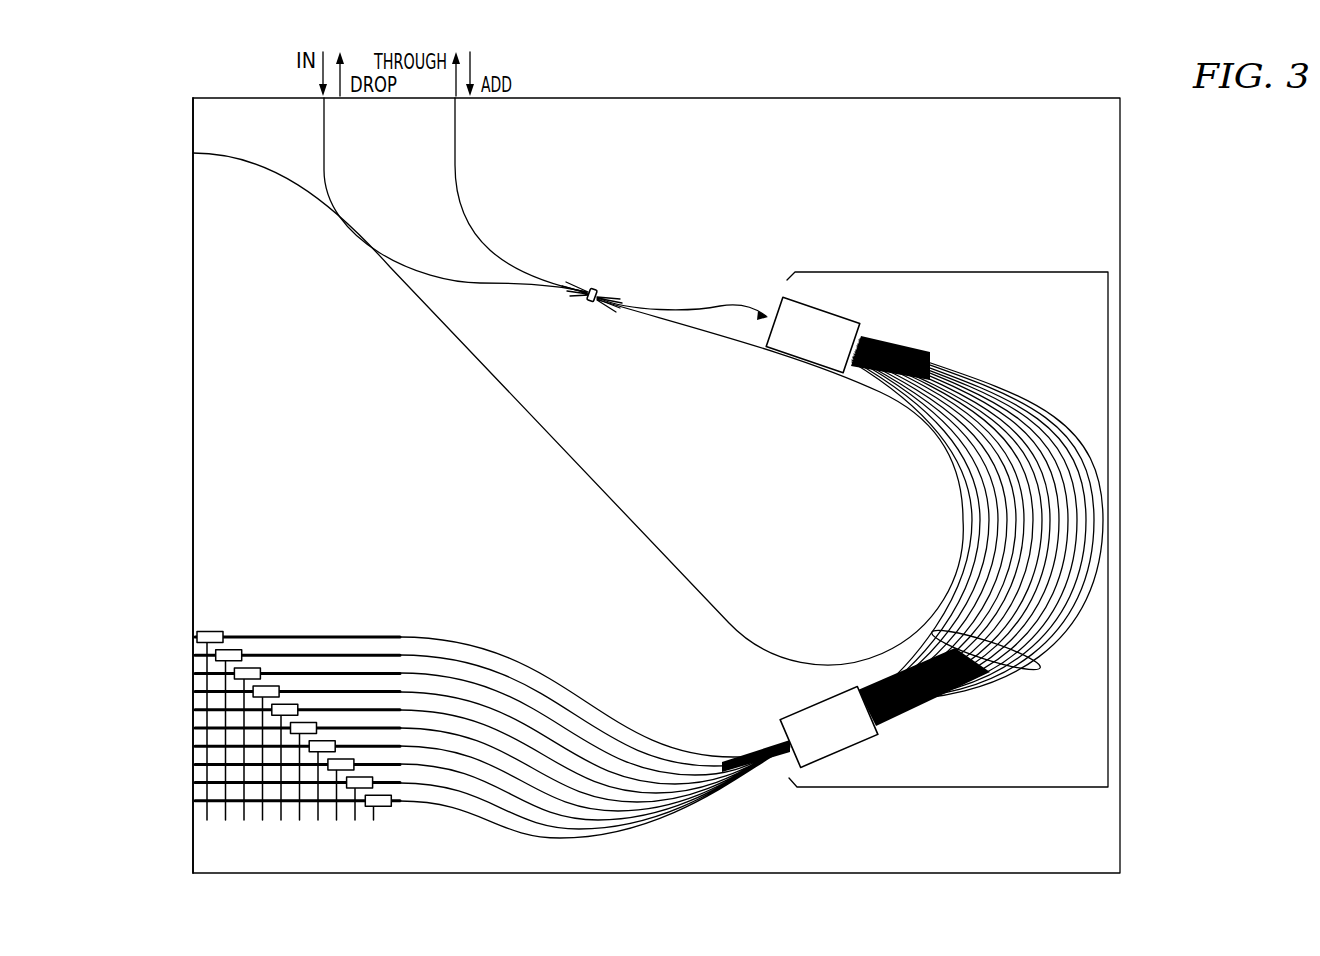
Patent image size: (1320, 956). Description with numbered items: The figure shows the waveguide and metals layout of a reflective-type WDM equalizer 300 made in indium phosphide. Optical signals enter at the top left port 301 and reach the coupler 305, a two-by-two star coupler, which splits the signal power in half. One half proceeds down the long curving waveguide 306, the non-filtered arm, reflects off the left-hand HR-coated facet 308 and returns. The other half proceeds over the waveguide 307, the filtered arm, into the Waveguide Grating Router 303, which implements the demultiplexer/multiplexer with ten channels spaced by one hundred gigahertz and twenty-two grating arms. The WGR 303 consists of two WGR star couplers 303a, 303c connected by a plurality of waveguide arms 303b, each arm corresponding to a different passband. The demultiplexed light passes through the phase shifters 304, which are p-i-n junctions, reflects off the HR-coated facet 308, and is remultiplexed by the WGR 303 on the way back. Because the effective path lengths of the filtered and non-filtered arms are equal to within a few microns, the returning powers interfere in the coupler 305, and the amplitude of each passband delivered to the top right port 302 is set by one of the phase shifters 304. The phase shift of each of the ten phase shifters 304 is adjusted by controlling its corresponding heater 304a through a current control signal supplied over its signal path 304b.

The WDM equalizer 300 is at (676, 98).
The top left port 301 is at (326, 128).
The top right port 302 is at (457, 128).
The Waveguide Grating Router 303 is at (952, 272).
The WGR star coupler 303a is at (857, 318).
The waveguide arms 303b is at (1040, 667).
The WGR star coupler 303c is at (866, 736).
The phase shifters 304 is at (318, 624).
The heater 304a is at (238, 648).
The signal path 304b is at (380, 818).
The coupler 305 is at (608, 283).
The long curving waveguide 306 is at (812, 378).
The waveguide 307 is at (696, 300).
The HR-coated facet 308 is at (200, 403).